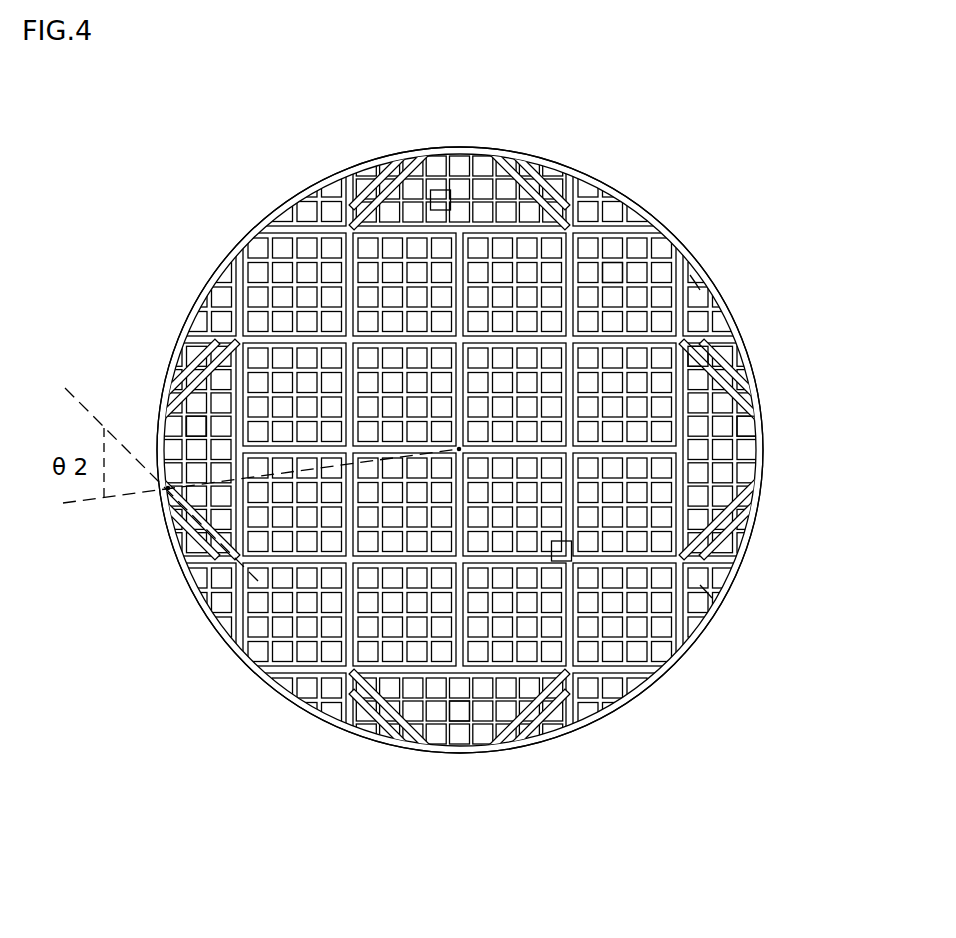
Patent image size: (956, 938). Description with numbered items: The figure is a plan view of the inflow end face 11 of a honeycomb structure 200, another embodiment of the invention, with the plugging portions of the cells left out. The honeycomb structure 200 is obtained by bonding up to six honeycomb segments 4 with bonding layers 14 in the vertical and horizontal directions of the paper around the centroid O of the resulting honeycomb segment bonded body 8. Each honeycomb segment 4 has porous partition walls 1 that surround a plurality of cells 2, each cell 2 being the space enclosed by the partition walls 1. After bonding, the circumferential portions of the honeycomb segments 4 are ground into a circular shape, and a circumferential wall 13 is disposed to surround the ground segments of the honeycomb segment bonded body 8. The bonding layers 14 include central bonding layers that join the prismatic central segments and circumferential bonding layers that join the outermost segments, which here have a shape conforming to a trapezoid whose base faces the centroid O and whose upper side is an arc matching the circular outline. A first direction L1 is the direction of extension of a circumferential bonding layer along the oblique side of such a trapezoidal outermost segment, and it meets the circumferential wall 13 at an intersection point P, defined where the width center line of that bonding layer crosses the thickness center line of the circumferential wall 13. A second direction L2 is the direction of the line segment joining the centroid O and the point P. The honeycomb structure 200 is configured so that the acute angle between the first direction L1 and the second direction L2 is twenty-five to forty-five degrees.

The honeycomb structure 200 is at (803, 95).
The inflow end face 11 is at (262, 208).
The partition walls 1 is at (459, 449).
The cells 2 is at (629, 300).
The honeycomb segments 4 is at (440, 207).
The honeycomb segment bonded body 8 is at (693, 272).
The circumferential wall 13 is at (707, 590).
The bonding layers 14 is at (398, 342).
The centroid O is at (459, 449).
The intersection point P is at (168, 489).
The first direction L1 is at (146, 480).
The second direction L2 is at (245, 487).